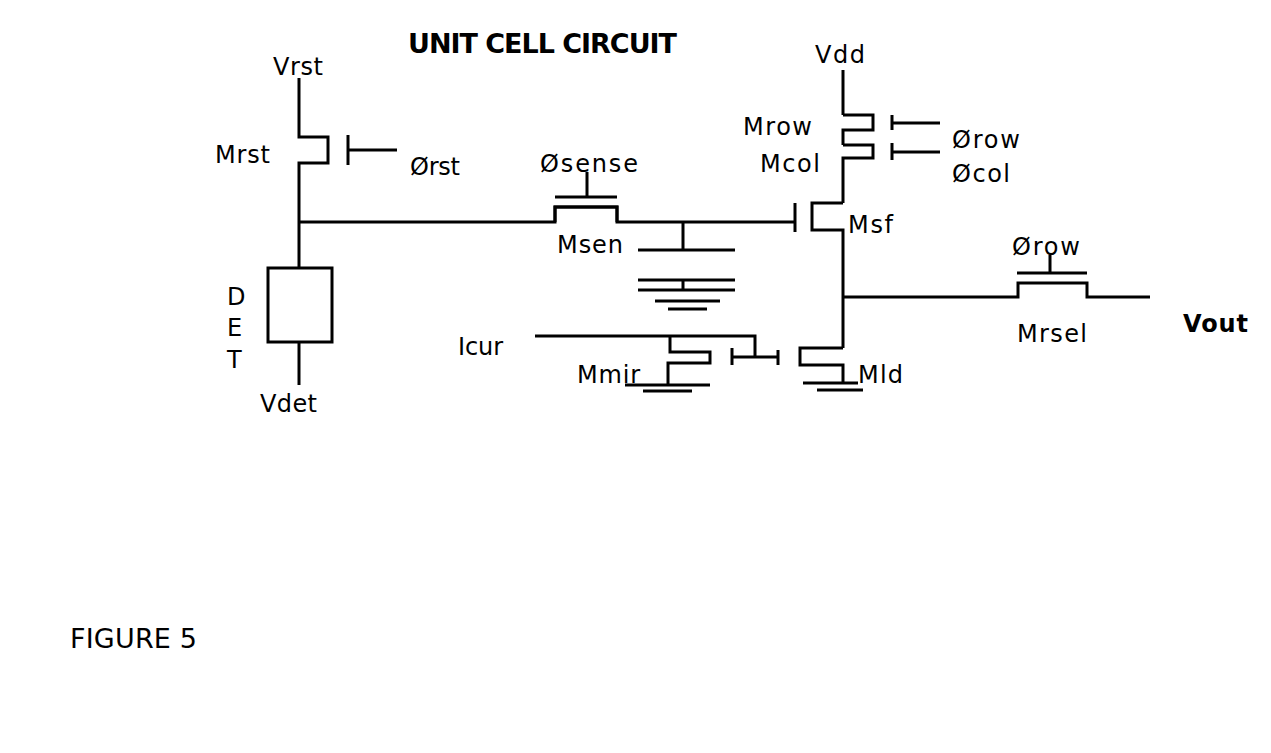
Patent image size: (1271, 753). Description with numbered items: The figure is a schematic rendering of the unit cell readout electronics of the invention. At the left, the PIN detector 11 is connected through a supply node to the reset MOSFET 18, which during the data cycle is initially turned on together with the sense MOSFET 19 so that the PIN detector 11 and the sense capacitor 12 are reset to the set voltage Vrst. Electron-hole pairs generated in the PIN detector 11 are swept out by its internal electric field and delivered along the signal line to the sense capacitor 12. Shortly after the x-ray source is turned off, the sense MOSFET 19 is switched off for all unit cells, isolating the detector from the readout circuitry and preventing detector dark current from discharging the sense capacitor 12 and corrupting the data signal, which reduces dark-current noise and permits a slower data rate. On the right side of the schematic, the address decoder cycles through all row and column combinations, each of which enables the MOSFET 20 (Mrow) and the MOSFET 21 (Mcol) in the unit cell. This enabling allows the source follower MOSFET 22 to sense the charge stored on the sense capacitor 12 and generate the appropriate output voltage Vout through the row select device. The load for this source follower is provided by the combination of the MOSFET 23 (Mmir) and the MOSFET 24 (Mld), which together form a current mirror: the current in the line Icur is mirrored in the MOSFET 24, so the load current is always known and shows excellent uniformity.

The PIN detector 11 is at (302, 313).
The sense capacitor 12 is at (665, 265).
The reset MOSFET 18 is at (303, 155).
The sense MOSFET 19 is at (628, 212).
The row MOSFET 20 is at (868, 110).
The column MOSFET 21 is at (862, 165).
The source follower MOSFET 22 is at (828, 233).
The current mirror MOSFET 23 is at (703, 375).
The load MOSFET 24 is at (847, 348).